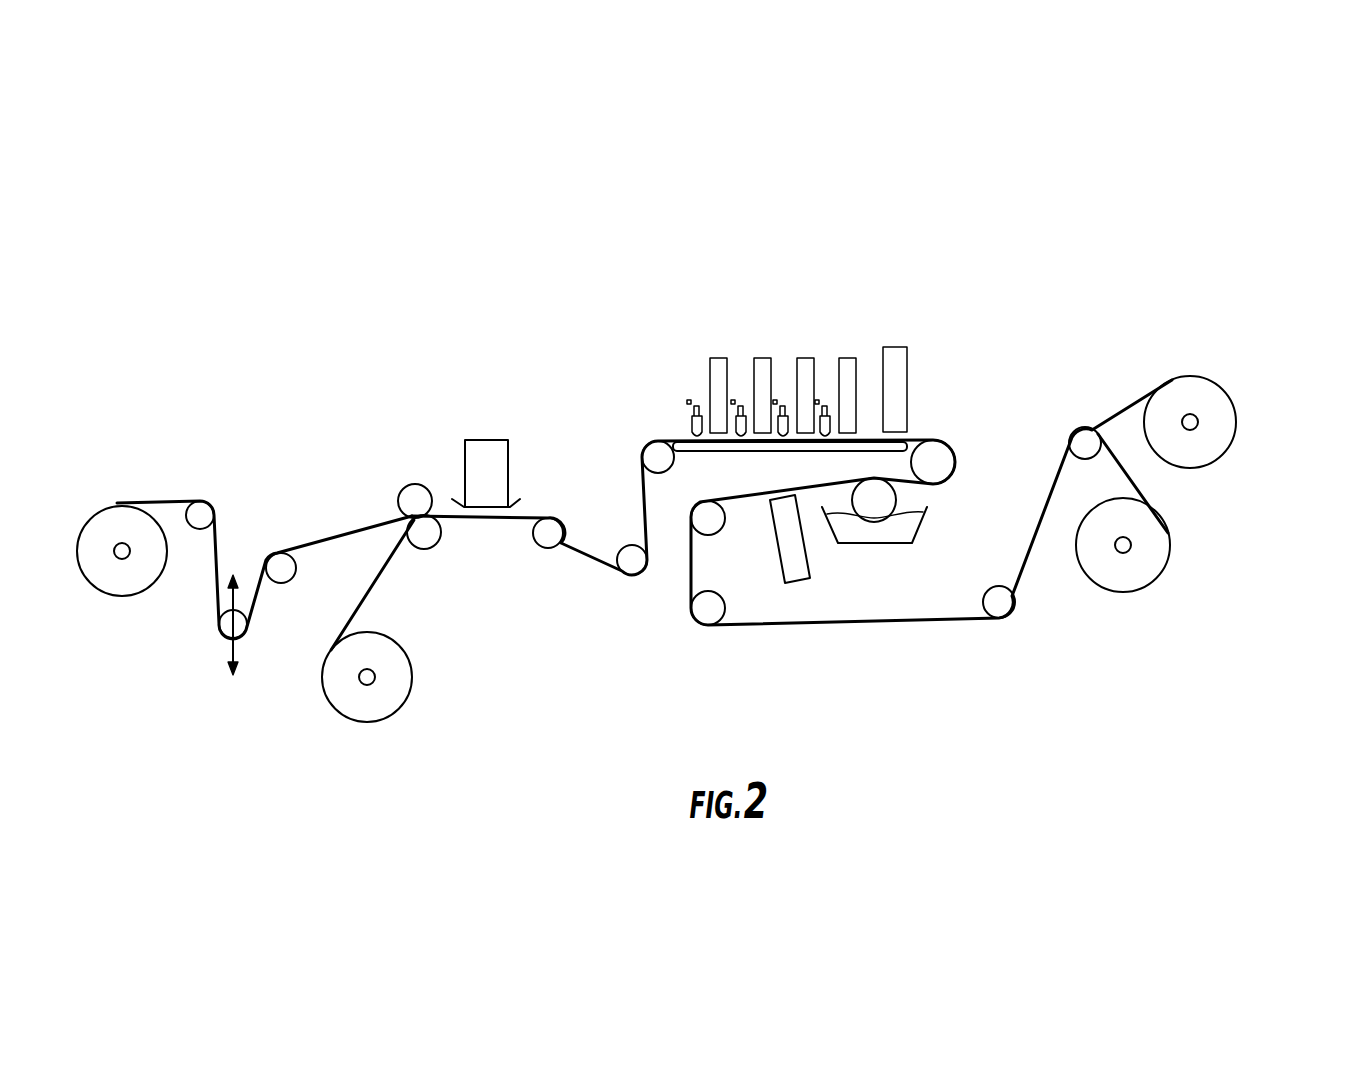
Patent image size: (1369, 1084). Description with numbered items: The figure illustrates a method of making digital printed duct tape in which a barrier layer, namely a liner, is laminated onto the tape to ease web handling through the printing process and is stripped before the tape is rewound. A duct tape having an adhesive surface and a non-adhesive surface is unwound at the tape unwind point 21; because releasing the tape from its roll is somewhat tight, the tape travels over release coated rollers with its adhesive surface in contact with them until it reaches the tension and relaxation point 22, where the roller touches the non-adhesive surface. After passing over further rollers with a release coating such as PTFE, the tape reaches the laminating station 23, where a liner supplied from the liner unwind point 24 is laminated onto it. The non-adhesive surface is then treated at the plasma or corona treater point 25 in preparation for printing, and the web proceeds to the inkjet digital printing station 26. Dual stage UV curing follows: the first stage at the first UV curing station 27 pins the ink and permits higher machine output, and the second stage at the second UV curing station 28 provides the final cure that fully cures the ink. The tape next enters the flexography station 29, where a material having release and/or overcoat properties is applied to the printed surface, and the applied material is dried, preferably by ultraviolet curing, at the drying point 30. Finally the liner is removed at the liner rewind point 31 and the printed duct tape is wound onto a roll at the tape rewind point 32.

The tape unwind point 21 is at (117, 503).
The tension and relaxation point 22 is at (220, 626).
The laminating station 23 is at (410, 503).
The liner unwind point 24 is at (455, 740).
The plasma or corona treater point 25 is at (487, 450).
The inkjet digital printing station 26 is at (817, 402).
The UV curing Station 1 27 is at (848, 358).
The UV curing Station 2 28 is at (895, 348).
The flexography station 29 is at (908, 670).
The drying point 30 is at (740, 683).
The liner rewind point 31 is at (1147, 568).
The tape rewind point 32 is at (1205, 448).